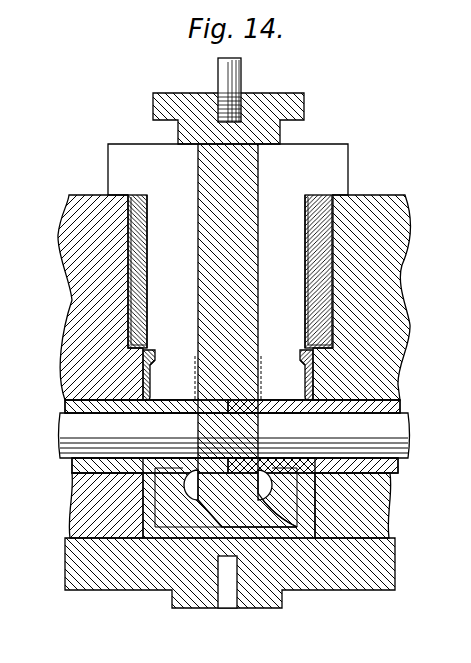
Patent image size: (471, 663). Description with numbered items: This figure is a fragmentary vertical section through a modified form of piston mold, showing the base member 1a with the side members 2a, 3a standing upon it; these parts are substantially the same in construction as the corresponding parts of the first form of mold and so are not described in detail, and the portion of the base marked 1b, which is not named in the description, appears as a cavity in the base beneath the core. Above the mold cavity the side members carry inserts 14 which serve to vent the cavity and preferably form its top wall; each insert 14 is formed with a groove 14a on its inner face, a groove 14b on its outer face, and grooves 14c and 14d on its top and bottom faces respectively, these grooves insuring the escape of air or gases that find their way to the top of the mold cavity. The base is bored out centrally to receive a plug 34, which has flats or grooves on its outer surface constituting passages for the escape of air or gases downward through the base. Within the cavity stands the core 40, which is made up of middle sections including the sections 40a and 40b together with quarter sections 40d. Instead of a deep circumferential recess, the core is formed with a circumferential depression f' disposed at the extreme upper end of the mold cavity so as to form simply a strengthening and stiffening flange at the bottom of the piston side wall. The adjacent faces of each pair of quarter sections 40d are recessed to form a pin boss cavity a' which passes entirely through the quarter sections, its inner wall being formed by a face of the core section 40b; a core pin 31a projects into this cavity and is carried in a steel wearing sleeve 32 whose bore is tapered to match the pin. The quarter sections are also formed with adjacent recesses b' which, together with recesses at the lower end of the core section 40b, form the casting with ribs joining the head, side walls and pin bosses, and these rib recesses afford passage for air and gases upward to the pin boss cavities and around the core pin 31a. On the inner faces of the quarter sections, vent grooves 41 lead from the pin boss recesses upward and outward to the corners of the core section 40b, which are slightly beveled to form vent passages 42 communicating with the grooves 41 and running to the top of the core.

The core 40 is at (218, 292).
The core section 40b is at (256, 102).
The middle core section 40a is at (120, 172).
The quarter section 40d is at (310, 157).
The insert 14 is at (231, 281).
The groove 14a is at (147, 287).
The groove 14b is at (345, 271).
The groove 14c is at (143, 194).
The groove 14d is at (326, 372).
The circumferential depression f' is at (227, 358).
The side member 2a is at (72, 298).
The side member 3a is at (400, 312).
The vent groove 41 is at (197, 387).
The vent passage 42 is at (197, 317).
The core pin 31a is at (413, 440).
The pin boss cavity a' is at (227, 423).
The recess b' is at (234, 467).
The wearing sleeve 32 is at (70, 468).
The base member 1a is at (100, 584).
The cavity 1b is at (245, 549).
The plug 34 is at (224, 609).